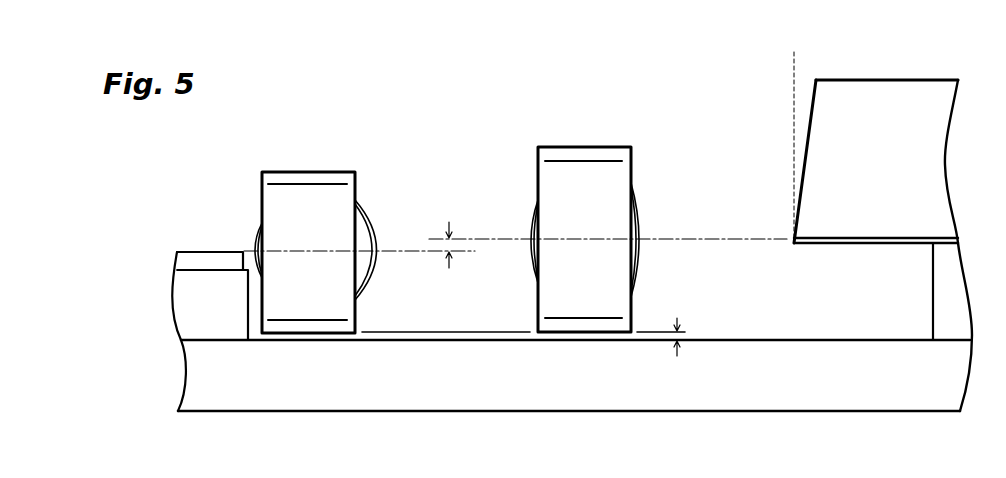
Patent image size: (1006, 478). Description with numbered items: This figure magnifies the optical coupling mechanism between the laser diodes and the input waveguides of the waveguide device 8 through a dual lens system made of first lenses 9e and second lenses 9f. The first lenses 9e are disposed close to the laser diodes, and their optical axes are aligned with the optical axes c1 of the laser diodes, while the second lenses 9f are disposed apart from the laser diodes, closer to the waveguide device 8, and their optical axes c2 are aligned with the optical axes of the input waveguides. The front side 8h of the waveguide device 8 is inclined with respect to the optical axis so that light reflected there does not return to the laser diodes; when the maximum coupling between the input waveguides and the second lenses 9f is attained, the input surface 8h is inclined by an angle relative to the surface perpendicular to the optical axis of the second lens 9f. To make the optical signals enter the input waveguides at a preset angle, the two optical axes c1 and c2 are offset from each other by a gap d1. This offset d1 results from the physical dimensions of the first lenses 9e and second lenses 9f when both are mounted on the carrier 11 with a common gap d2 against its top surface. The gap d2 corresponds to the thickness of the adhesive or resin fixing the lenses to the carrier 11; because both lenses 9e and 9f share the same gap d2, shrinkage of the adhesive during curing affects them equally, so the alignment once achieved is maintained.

The carrier 11 is at (785, 394).
The first lenses 9e is at (302, 170).
The second lenses 9f is at (578, 146).
The waveguide device 8 is at (911, 90).
The front side 8h is at (807, 108).
The optical axes of the LDs c1 is at (407, 254).
The optical axes of the second lenses c2 is at (695, 236).
The offset d1 is at (452, 233).
The gap d2 is at (680, 324).